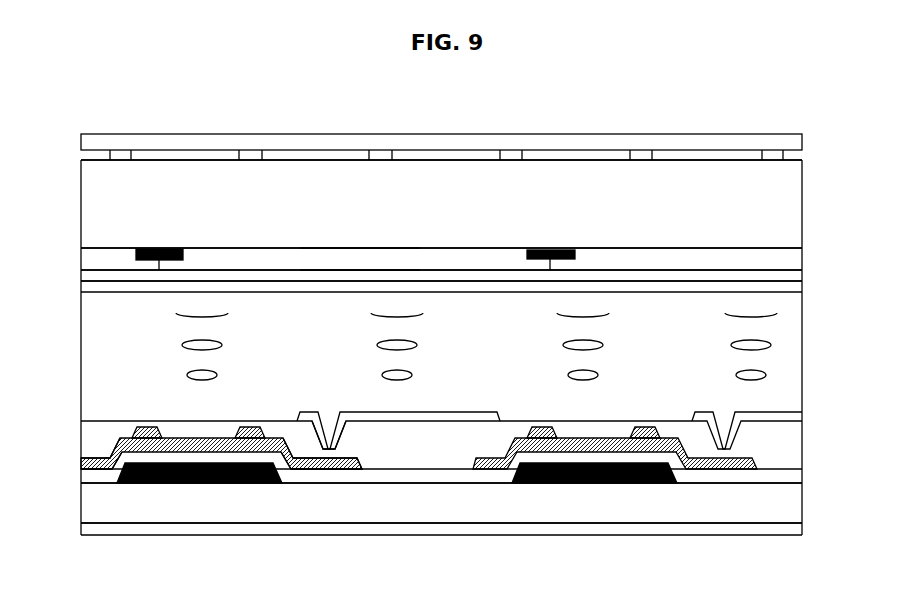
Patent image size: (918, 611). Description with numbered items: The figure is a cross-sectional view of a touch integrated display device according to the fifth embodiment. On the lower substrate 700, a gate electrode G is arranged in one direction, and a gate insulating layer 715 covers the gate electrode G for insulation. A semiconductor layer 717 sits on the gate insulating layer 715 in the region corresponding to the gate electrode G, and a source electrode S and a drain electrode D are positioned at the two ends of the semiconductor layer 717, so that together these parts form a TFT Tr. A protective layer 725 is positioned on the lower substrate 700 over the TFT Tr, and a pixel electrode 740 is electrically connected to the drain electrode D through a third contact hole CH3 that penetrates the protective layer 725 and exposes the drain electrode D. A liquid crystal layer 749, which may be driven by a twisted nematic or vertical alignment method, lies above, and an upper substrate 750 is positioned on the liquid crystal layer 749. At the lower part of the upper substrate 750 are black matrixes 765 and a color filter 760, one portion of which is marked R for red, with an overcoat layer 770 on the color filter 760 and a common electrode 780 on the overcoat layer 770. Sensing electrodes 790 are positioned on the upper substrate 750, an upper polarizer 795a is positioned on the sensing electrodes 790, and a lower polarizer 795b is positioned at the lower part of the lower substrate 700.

The upper polarizer 795a is at (803, 145).
The sensing electrodes 790 is at (774, 155).
The upper substrate 750 is at (803, 200).
The color filter 760 is at (803, 258).
The red color filter R is at (360, 259).
The black matrixes 765 is at (550, 250).
The overcoat layer 770 is at (803, 280).
The common electrode 780 is at (803, 292).
The liquid crystal layer 749 is at (803, 365).
The protective layer 725 is at (803, 440).
The pixel electrode 740 is at (411, 412).
The gate insulating layer 715 is at (803, 472).
The lower substrate 700 is at (803, 506).
The lower polarizer 795b is at (803, 529).
The TFT Tr is at (192, 488).
The semiconductor layer 717 is at (181, 452).
The source electrode S is at (80, 462).
The drain electrode D is at (307, 458).
The gate electrode G is at (227, 483).
The third contact hole CH3 is at (338, 450).